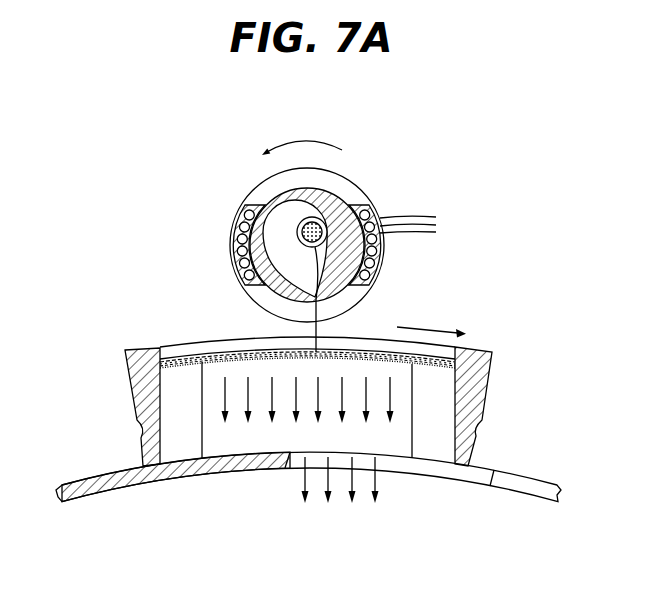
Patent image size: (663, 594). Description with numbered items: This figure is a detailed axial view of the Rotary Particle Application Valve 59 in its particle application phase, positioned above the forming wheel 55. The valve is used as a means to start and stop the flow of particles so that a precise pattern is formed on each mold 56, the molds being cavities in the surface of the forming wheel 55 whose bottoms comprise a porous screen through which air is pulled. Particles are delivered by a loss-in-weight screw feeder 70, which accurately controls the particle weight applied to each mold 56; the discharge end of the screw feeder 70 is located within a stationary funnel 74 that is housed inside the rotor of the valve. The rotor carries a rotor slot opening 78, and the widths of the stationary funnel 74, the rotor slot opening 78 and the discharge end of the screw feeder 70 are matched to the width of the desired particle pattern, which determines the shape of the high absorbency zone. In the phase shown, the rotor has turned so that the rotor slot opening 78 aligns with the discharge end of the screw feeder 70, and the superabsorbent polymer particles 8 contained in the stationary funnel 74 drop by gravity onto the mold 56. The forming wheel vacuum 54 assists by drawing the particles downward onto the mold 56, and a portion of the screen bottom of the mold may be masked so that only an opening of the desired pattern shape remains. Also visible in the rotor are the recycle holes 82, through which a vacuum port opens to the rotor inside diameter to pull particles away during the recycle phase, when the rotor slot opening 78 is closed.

The superabsorbent polymer particles 8 is at (322, 342).
The forming wheel vacuum 54 is at (361, 546).
The forming wheel 55 is at (137, 350).
The mold 56 is at (214, 340).
The Rotary Particle Application Valve 59 is at (253, 203).
The screw feeder 70 is at (323, 221).
The stationary funnel 74 is at (292, 190).
The rotor slot opening 78 is at (322, 303).
The recycle holes 82 is at (425, 224).